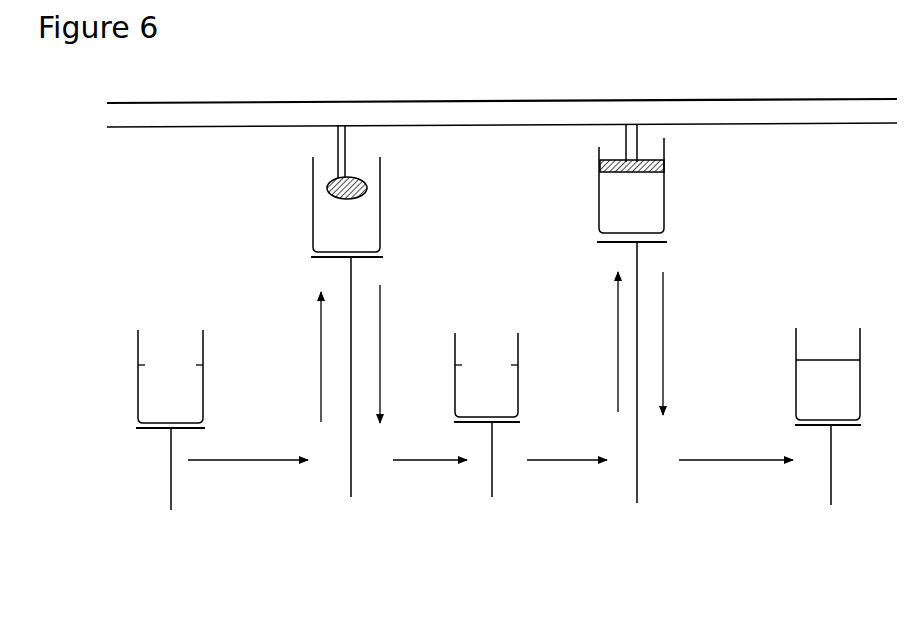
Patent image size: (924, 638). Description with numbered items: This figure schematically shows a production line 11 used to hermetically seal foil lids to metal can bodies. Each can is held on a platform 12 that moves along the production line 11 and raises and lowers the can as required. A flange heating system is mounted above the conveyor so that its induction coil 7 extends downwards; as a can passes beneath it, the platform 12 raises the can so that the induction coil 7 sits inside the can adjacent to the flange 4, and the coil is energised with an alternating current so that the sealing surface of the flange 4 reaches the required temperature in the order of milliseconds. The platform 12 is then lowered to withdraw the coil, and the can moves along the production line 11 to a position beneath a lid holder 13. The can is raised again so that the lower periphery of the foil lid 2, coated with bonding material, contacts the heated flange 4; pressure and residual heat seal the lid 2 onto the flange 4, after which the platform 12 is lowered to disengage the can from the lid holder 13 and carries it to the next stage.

The foil lid 2 is at (832, 355).
The flange 4 is at (145, 366).
The induction coil 7 is at (357, 170).
The production line 11 is at (490, 426).
The platform 12 is at (153, 428).
The lid holder 13 is at (645, 162).